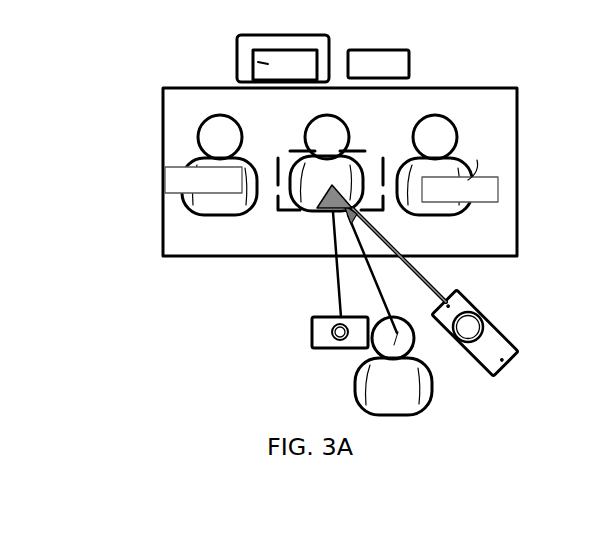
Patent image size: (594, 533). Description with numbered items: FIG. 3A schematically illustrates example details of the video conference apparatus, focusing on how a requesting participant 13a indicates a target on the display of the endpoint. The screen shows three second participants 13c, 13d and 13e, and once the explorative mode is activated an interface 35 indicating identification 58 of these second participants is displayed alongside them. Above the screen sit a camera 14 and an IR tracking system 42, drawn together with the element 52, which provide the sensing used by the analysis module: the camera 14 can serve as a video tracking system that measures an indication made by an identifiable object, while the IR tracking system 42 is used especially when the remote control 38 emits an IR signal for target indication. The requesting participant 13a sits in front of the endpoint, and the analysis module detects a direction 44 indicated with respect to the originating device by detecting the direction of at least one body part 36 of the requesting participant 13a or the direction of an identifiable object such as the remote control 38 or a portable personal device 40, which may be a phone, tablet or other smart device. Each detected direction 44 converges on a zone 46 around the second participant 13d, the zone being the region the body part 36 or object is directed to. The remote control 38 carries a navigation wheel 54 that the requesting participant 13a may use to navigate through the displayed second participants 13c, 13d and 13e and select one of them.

The video conferencing system 52 is at (273, 42).
The camera 14 is at (253, 60).
The IR tracking system 42 is at (409, 66).
The second participant 13e is at (208, 214).
The second participant 13d is at (334, 136).
The second participant 13c is at (438, 215).
The zone 46 is at (297, 164).
The interface 35 is at (169, 178).
The identification 58 is at (470, 178).
The portable personal device 40 is at (312, 330).
The requesting participant 13a is at (428, 402).
The body part 36 is at (400, 339).
The remote control 38 is at (515, 341).
The navigation wheel 54 is at (484, 316).
The direction 44 is at (335, 281).